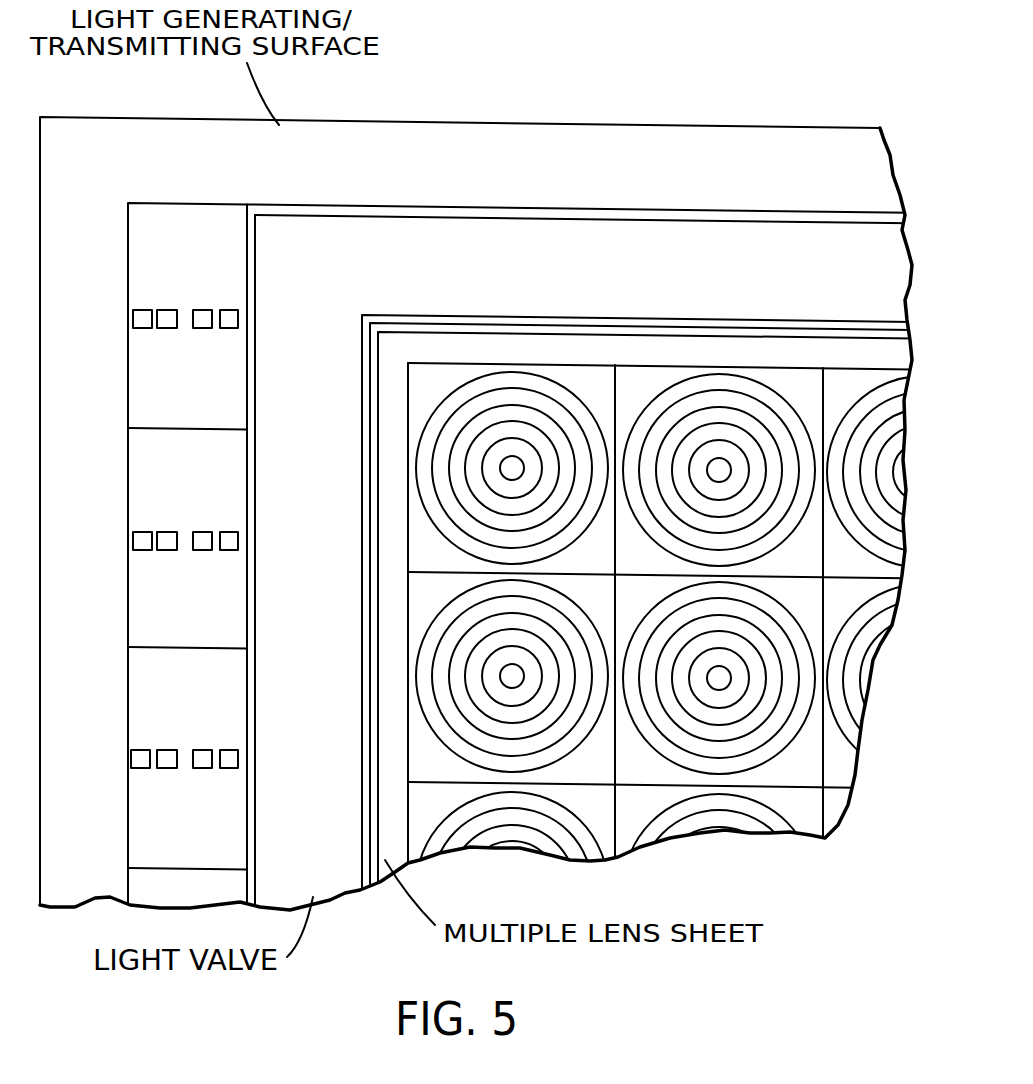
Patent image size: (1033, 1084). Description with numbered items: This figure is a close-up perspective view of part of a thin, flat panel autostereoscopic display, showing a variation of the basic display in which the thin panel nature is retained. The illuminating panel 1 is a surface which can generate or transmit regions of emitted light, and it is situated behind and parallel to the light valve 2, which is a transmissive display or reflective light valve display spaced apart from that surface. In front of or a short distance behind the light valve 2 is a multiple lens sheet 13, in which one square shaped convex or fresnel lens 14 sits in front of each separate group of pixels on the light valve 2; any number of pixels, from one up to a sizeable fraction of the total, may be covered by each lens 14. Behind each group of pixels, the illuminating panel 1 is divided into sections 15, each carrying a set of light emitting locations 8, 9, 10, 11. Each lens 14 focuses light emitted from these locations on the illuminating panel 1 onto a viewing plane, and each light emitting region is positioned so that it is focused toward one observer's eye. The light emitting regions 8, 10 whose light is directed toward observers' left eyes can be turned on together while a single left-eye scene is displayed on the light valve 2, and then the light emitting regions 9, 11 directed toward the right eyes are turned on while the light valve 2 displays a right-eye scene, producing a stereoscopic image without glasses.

The illuminating panel 1 is at (504, 130).
The light valve 2 is at (593, 243).
The light emitting location 8 is at (200, 309).
The light emitting location 9 is at (228, 329).
The light emitting location 10 is at (143, 309).
The light emitting location 11 is at (168, 329).
The multiple lens sheet 13 is at (708, 347).
The lens 14 is at (428, 366).
The section of the illuminating panel surface 15 is at (131, 447).